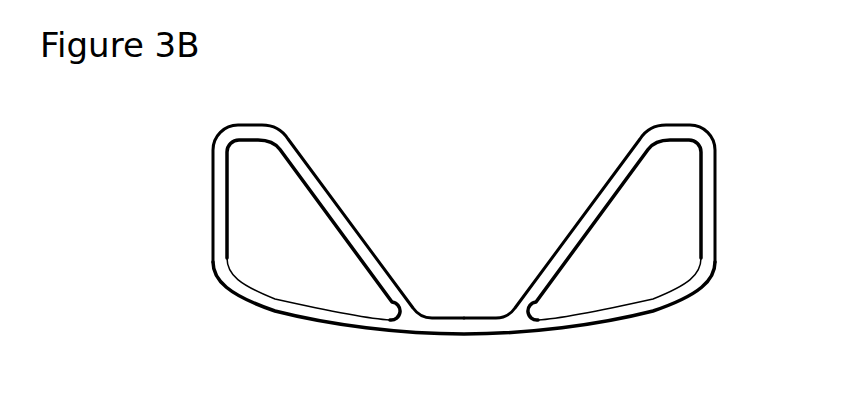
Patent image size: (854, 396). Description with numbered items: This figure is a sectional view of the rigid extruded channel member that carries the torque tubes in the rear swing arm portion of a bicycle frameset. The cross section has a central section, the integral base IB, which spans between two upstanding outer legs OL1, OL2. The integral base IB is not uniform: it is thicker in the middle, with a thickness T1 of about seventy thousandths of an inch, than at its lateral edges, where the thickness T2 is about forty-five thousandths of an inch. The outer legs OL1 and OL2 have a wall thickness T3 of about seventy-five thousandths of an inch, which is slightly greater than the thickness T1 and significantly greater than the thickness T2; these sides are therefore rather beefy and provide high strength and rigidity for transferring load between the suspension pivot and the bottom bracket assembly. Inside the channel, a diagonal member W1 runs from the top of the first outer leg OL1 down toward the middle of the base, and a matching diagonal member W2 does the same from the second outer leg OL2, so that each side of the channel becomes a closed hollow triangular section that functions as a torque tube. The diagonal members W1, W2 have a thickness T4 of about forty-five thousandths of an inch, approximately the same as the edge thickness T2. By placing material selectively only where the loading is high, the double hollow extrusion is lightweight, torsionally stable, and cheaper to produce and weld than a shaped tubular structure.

The outer leg OL1 is at (214, 165).
The outer leg OL2 is at (710, 280).
The diagonal member W1 is at (302, 157).
The diagonal member W2 is at (560, 248).
The integral base IB is at (545, 330).
The thickness of the integral base in the middle T1 is at (431, 367).
The thickness of the base at the lateral edges T2 is at (283, 340).
The thickness of the outer legs T3 is at (262, 182).
The thickness of the diagonal members T4 is at (298, 218).